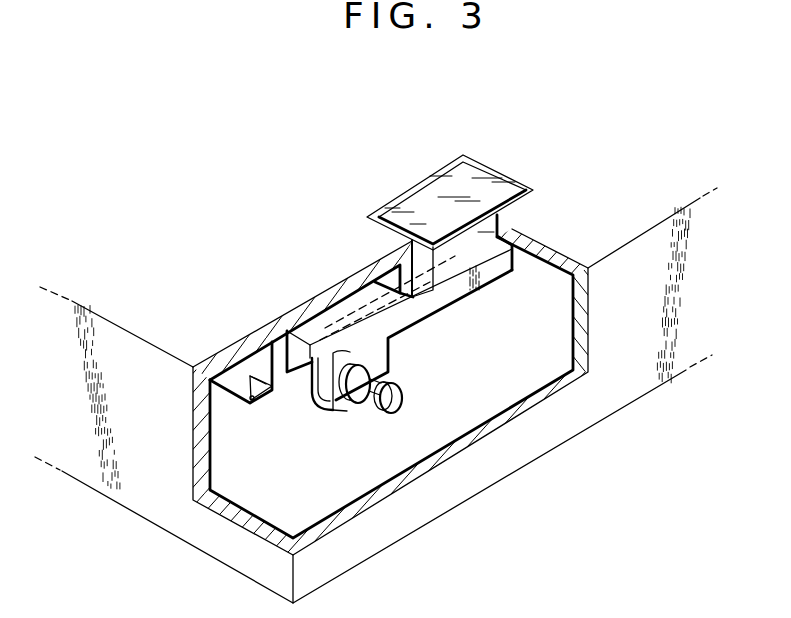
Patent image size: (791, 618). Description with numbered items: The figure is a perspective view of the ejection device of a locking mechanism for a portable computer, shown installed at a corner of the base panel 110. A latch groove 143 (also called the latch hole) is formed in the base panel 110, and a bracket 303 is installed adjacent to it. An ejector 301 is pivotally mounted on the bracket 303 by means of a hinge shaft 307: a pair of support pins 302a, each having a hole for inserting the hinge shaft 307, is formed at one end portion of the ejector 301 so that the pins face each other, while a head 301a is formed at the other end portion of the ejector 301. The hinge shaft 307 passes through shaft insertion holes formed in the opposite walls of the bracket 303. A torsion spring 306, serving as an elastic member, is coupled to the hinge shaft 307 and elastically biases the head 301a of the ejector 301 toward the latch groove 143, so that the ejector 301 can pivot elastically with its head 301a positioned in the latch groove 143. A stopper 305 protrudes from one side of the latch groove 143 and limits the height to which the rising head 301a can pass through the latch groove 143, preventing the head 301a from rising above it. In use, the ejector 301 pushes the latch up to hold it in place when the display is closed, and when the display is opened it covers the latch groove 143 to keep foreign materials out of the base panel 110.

The base panel 110 is at (636, 357).
The latch groove 143 is at (408, 187).
The ejector 301 is at (474, 190).
The head 301a is at (490, 250).
The support pins 302a is at (347, 411).
The bracket 303 is at (260, 358).
The stopper 305 is at (392, 278).
The torsion spring 306 is at (290, 392).
The hinge shaft 307 is at (406, 390).